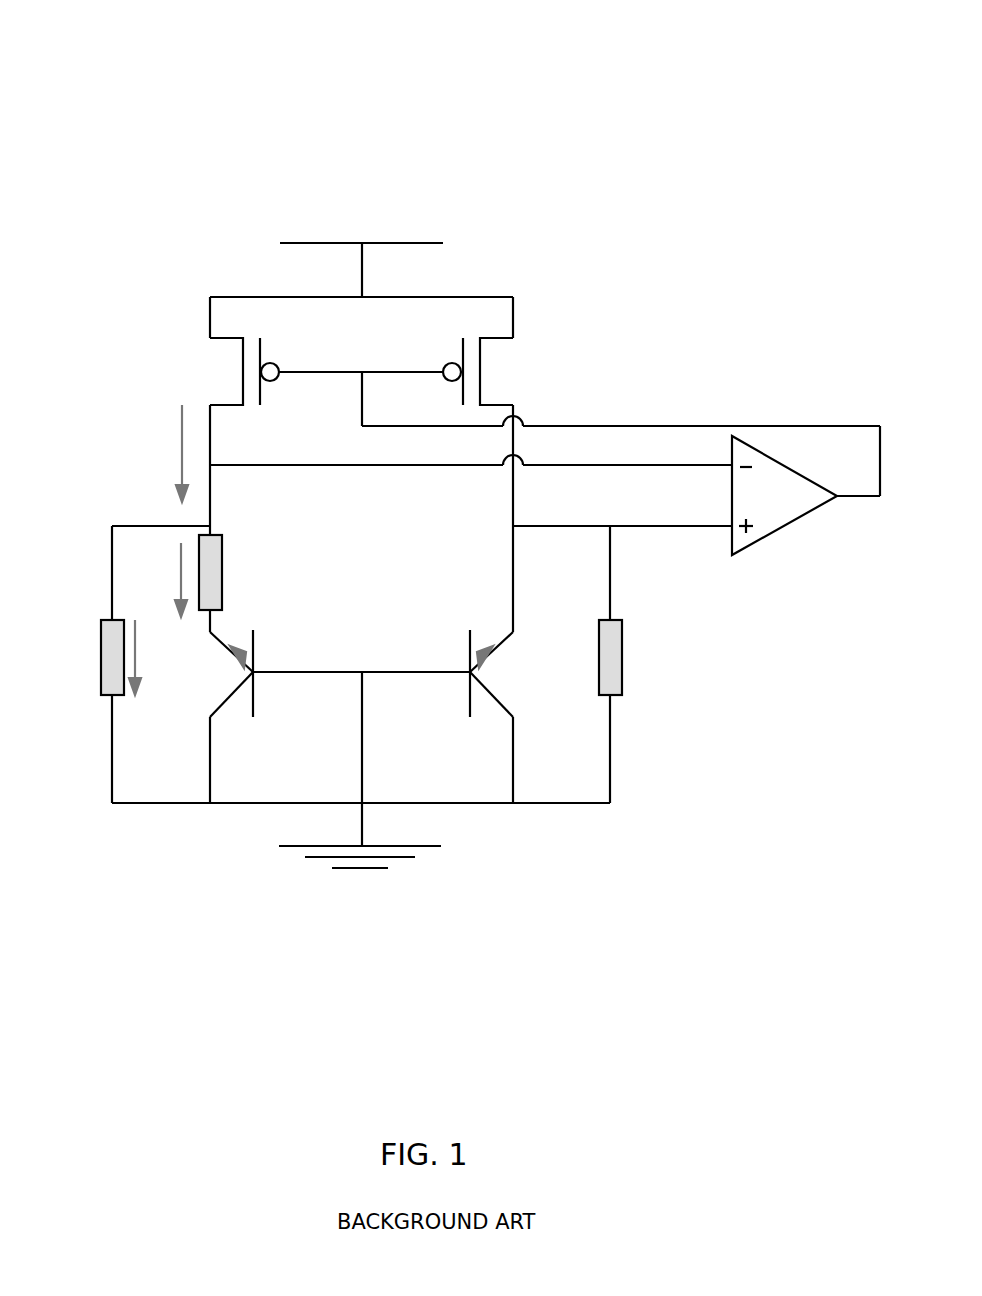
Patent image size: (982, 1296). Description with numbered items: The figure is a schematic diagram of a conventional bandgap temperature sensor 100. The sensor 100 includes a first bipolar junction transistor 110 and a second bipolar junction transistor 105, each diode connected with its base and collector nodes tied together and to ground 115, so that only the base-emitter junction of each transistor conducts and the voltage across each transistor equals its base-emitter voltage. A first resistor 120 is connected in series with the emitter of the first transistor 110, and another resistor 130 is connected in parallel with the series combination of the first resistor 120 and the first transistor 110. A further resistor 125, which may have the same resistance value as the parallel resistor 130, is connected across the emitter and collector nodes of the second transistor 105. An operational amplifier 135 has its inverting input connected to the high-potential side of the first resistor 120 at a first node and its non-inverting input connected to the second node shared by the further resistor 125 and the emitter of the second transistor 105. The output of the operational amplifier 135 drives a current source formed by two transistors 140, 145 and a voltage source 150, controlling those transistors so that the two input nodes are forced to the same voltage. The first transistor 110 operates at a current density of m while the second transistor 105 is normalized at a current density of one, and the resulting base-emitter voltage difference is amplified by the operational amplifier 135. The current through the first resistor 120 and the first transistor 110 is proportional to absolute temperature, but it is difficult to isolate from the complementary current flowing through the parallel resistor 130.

The bandgap temperature sensor 100 is at (185, 37).
The voltage source 150 is at (455, 236).
The transistor 145 is at (218, 349).
The transistor 140 is at (512, 350).
The operational amplifier 135 is at (778, 543).
The resistor 120 is at (228, 540).
The first bipolar junction transistor 110 is at (262, 636).
The second bipolar junction transistor 105 is at (457, 619).
The resistor 125 is at (632, 624).
The resistor 130 is at (95, 703).
The ground 115 is at (457, 853).